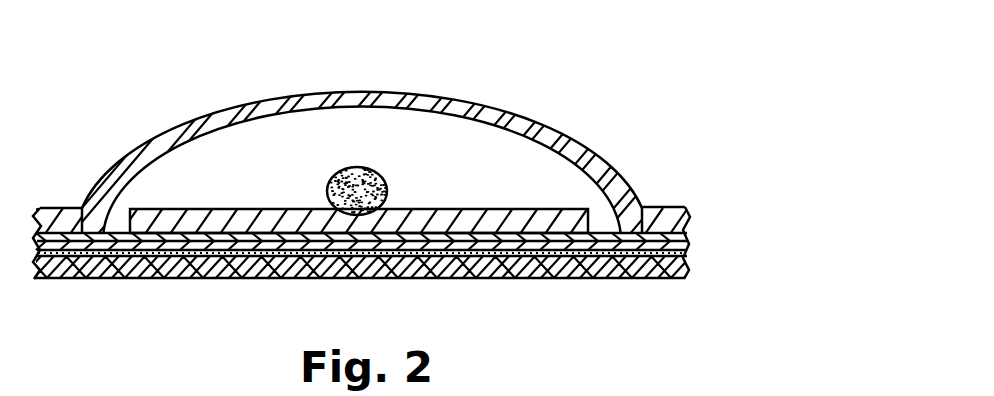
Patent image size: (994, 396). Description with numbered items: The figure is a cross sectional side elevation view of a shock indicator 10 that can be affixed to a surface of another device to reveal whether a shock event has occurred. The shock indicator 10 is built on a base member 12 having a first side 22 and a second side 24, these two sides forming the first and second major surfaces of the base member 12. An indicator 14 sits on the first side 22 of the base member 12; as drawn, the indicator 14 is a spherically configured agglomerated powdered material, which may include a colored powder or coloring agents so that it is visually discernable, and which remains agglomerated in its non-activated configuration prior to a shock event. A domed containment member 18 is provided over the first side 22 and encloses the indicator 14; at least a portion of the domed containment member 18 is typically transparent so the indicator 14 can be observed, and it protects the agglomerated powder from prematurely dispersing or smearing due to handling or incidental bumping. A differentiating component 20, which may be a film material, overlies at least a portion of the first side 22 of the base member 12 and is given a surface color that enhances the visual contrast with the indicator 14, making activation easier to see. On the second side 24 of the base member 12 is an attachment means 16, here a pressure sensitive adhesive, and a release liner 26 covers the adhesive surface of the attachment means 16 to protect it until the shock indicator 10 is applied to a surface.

The shock indicator 10 is at (587, 72).
The base member 12 is at (688, 243).
The indicator 14 is at (340, 173).
The attachment means 16 is at (687, 250).
The domed containment member 18 is at (378, 97).
The differentiating component 20 is at (548, 213).
The first side 22 is at (615, 215).
The second side 24 is at (74, 270).
The release liner 26 is at (687, 268).